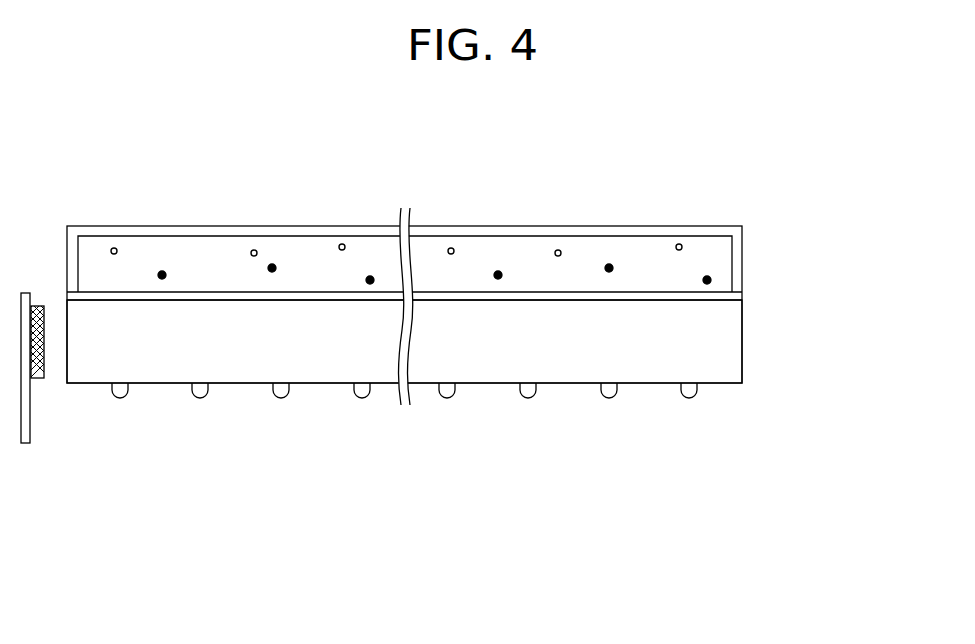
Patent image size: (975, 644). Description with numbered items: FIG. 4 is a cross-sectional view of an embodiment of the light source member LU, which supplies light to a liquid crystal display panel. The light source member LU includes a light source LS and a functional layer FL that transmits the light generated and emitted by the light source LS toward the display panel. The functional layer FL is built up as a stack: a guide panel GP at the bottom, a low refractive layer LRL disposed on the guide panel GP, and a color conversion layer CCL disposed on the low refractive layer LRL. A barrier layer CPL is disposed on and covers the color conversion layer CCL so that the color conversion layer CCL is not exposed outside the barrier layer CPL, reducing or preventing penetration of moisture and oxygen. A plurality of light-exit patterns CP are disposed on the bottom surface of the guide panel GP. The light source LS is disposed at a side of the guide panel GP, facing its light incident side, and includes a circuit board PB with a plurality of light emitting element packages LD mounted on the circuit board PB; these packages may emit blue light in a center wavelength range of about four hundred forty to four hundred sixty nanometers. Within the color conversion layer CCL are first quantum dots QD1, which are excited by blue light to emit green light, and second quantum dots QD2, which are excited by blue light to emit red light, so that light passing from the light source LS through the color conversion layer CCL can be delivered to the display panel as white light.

The light source member LU is at (499, 278).
The functional layer FL is at (499, 310).
The barrier layer CPL is at (728, 231).
The color conversion layer CCL is at (483, 268).
The first quantum dot QD1 is at (683, 247).
The second quantum dot QD2 is at (711, 280).
The low refractive layer LRL is at (736, 296).
The guide panel GP is at (735, 341).
The light-exit pattern CP is at (464, 399).
The light source LS is at (57, 437).
The circuit board PB is at (25, 444).
The light emitting element package LD is at (40, 372).